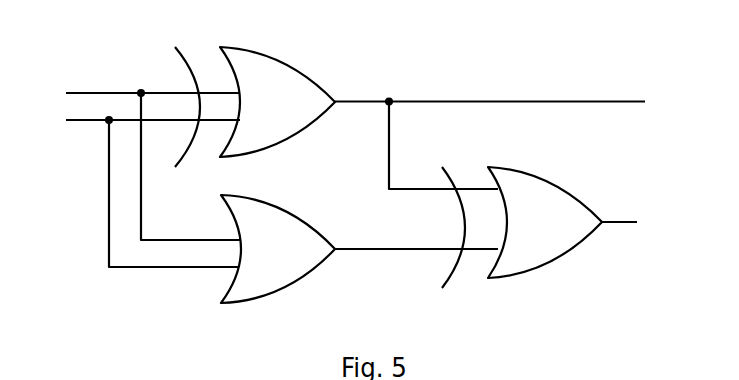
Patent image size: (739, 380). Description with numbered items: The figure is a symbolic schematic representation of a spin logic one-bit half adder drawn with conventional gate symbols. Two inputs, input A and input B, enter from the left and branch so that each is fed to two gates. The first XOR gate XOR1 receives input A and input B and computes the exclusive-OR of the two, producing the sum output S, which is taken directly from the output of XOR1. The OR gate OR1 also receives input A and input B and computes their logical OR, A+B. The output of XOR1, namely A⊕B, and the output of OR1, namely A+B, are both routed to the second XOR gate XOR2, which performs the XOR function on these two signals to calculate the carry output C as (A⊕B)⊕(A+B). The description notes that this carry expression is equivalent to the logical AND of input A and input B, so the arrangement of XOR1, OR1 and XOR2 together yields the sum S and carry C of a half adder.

The first XOR gate XOR1 is at (255, 107).
The OR gate OR1 is at (278, 249).
The second XOR gate XOR2 is at (522, 227).
The input A is at (143, 162).
The input B is at (143, 189).
The sum output S is at (497, 141).
The carry output C is at (626, 223).